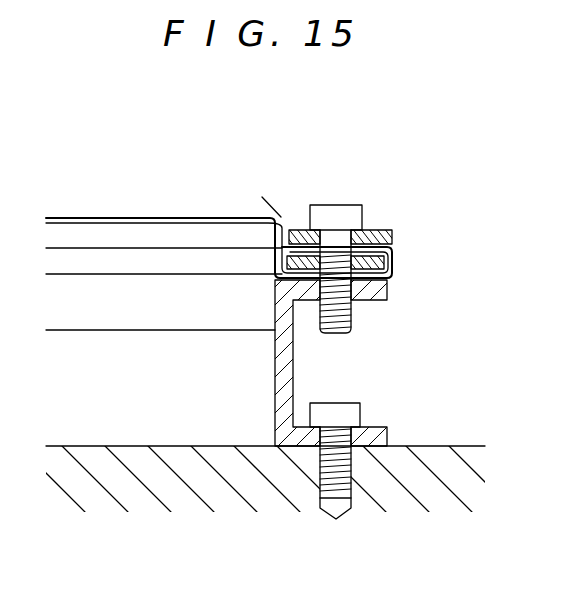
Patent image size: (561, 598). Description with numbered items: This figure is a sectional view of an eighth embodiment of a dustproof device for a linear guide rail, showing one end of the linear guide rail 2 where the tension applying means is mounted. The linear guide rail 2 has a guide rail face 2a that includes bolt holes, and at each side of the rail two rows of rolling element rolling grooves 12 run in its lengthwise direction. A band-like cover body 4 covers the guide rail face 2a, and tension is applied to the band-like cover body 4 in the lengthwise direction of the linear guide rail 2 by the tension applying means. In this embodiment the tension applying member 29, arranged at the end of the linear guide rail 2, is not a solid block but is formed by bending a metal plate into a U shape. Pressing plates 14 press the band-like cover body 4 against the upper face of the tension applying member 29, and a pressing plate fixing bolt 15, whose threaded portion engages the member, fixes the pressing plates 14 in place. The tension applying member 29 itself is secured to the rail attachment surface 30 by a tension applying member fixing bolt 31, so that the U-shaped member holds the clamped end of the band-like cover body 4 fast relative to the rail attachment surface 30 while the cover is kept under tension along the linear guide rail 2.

The linear guide rail 2 is at (138, 422).
The guide rail face 2a is at (190, 223).
The band-like cover body 4 is at (145, 217).
The rolling element rolling grooves 12 is at (100, 298).
The pressing plates 14 is at (392, 236).
The pressing plate fixing bolt 15 is at (337, 213).
The tension applying member 29 is at (383, 290).
The rail attachment surface 30 is at (433, 446).
The tension applying member fixing bolt 31 is at (337, 408).